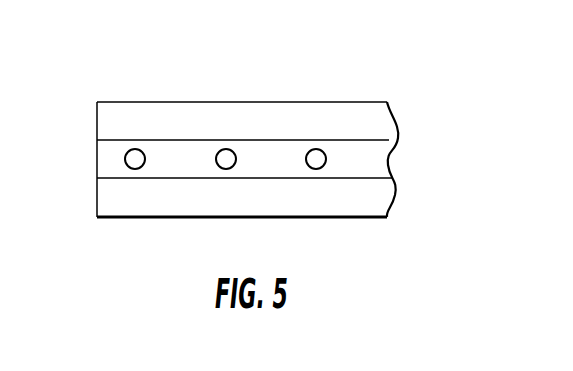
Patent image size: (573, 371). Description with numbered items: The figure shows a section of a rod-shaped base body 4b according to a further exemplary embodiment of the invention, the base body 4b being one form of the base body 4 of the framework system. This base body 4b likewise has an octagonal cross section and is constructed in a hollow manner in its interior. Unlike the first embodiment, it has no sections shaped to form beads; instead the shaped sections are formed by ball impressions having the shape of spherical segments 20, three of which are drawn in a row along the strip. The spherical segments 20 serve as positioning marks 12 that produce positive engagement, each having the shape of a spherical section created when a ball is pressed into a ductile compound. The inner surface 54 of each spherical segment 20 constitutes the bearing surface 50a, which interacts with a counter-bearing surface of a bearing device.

The base body 4 is at (398, 70).
The rod-shaped base body 4b is at (96, 160).
The positioning mark 12 is at (341, 154).
The spherical segment 20 is at (307, 148).
The inner surface 54 is at (208, 154).
The bearing surface 50a is at (119, 166).